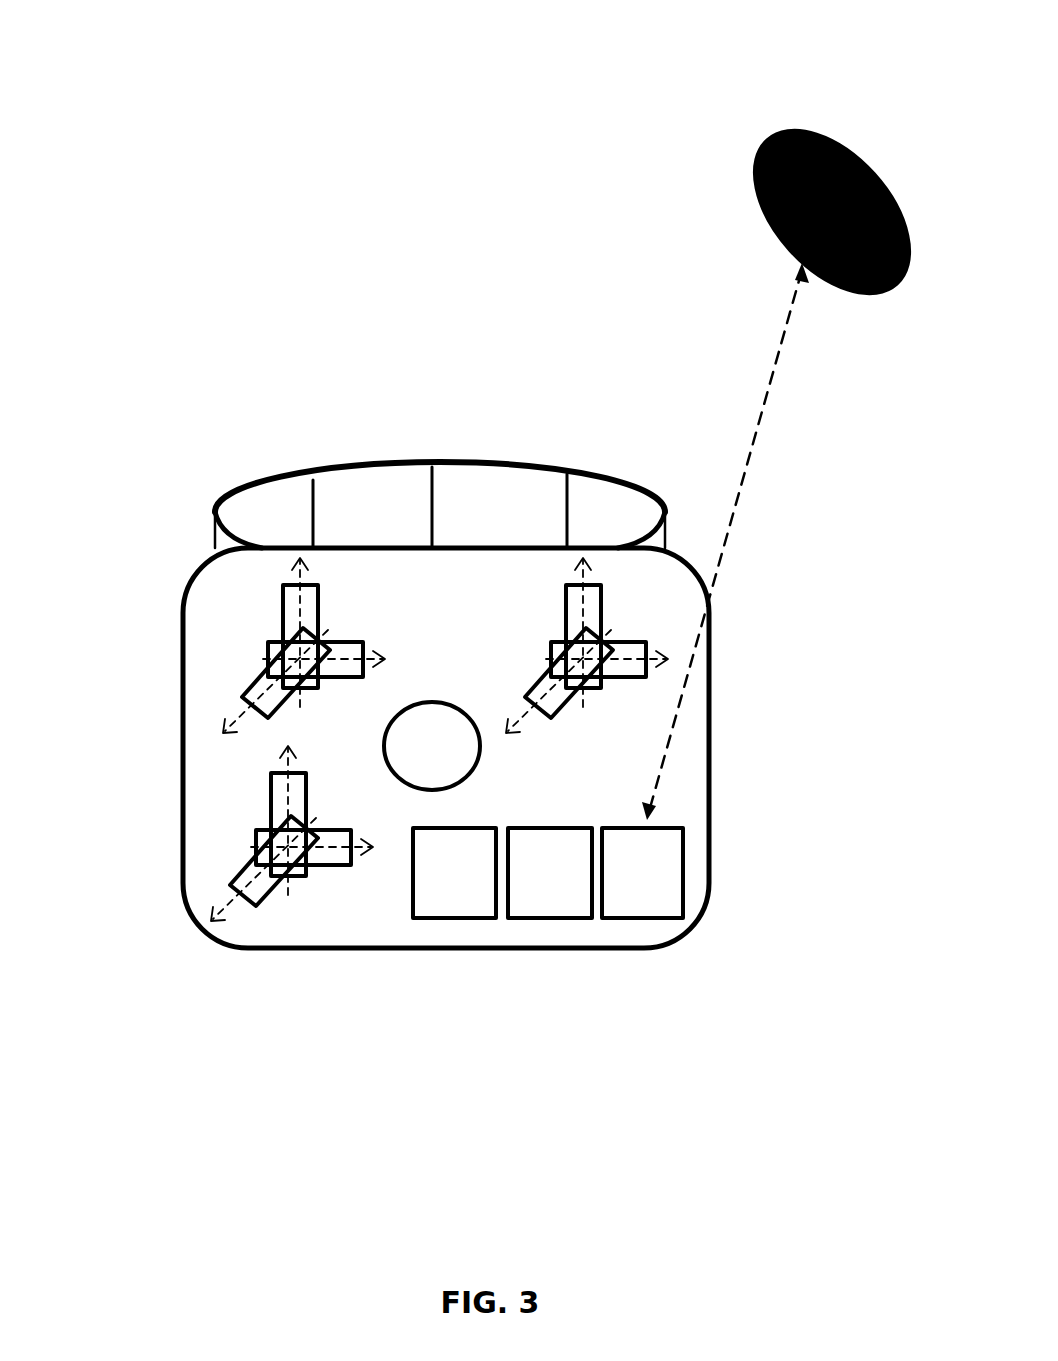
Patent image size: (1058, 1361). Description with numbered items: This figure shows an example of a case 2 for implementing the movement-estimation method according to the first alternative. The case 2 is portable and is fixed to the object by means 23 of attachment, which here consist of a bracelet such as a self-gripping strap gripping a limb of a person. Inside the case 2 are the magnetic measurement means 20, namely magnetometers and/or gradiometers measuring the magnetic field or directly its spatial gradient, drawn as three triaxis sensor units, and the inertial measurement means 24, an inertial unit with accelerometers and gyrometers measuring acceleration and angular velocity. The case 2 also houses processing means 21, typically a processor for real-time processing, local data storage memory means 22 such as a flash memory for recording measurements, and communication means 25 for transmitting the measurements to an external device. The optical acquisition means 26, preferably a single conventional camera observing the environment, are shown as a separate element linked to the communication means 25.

The case 2 is at (372, 599).
The magnetic measurement means 20 is at (446, 739).
The processing means 21 is at (460, 933).
The local data storage memory means 22 is at (553, 932).
The means of attachment 23 is at (502, 453).
The inertial measurement means 24 is at (415, 672).
The communication means 25 is at (697, 884).
The optical acquisition means 26 is at (832, 128).